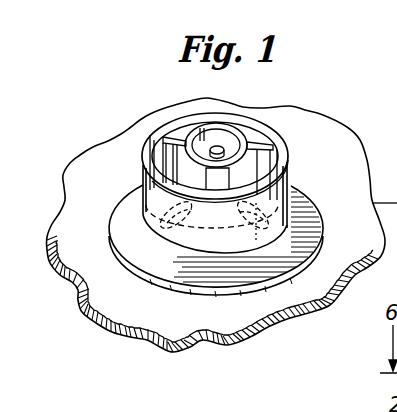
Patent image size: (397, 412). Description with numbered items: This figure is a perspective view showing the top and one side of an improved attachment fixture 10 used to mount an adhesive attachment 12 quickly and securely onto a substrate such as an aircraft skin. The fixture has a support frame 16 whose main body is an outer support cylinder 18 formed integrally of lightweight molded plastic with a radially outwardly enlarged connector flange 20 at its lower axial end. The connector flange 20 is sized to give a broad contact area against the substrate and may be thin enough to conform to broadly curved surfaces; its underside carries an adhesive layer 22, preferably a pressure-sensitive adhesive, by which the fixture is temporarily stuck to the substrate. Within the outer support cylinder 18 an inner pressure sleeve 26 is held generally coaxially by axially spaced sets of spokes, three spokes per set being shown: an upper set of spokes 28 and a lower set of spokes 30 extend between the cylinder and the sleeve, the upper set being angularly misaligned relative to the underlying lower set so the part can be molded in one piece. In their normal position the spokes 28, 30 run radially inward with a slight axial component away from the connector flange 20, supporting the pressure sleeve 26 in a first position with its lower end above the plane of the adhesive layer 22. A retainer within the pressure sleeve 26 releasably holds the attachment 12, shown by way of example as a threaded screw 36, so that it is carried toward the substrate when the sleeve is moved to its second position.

The attachment fixture 10 is at (297, 149).
The adhesive attachment 12 is at (227, 143).
The support frame 16 is at (128, 182).
The outer support cylinder 18 is at (286, 192).
The connector flange 20 is at (184, 276).
The adhesive layer 22 is at (263, 292).
The inner pressure sleeve 26 is at (290, 128).
The upper set of spokes 28 is at (148, 129).
The lower set of spokes 30 is at (143, 216).
The threaded screw 36 is at (214, 147).